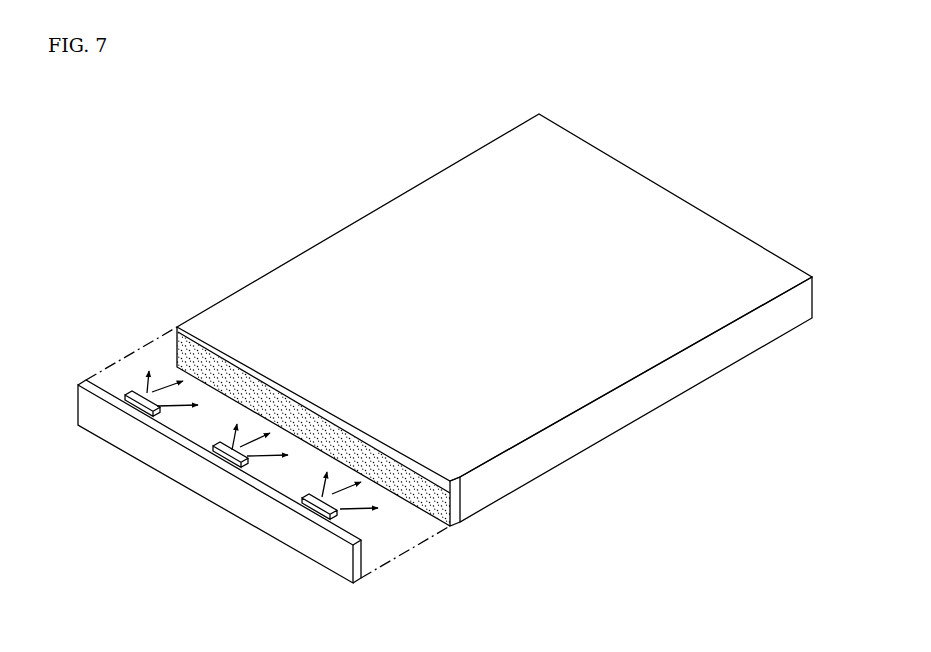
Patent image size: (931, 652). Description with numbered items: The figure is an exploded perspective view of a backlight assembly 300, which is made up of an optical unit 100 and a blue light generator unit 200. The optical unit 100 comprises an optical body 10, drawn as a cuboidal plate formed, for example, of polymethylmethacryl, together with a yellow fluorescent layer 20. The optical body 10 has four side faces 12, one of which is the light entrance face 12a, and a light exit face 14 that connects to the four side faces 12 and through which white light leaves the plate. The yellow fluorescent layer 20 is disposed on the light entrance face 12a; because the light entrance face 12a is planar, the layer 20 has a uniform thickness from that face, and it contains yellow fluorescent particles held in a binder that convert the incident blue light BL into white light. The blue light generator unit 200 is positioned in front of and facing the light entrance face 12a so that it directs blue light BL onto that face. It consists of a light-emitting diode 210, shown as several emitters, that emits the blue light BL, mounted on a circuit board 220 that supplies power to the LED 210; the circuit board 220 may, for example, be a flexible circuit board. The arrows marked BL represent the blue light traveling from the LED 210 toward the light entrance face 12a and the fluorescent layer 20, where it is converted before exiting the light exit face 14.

The optical body 10 is at (333, 263).
The side faces 12 is at (600, 423).
The light entrance face 12a is at (462, 500).
The light exit face 14 is at (735, 306).
The yellow fluorescent layer 20 is at (420, 497).
The optical unit 100 is at (185, 307).
The blue light generator unit 200 is at (144, 308).
The light-emitting diode 210 is at (141, 396).
The circuit board 220 is at (97, 390).
The backlight assembly 300 is at (118, 236).
The blue light BL is at (158, 406).